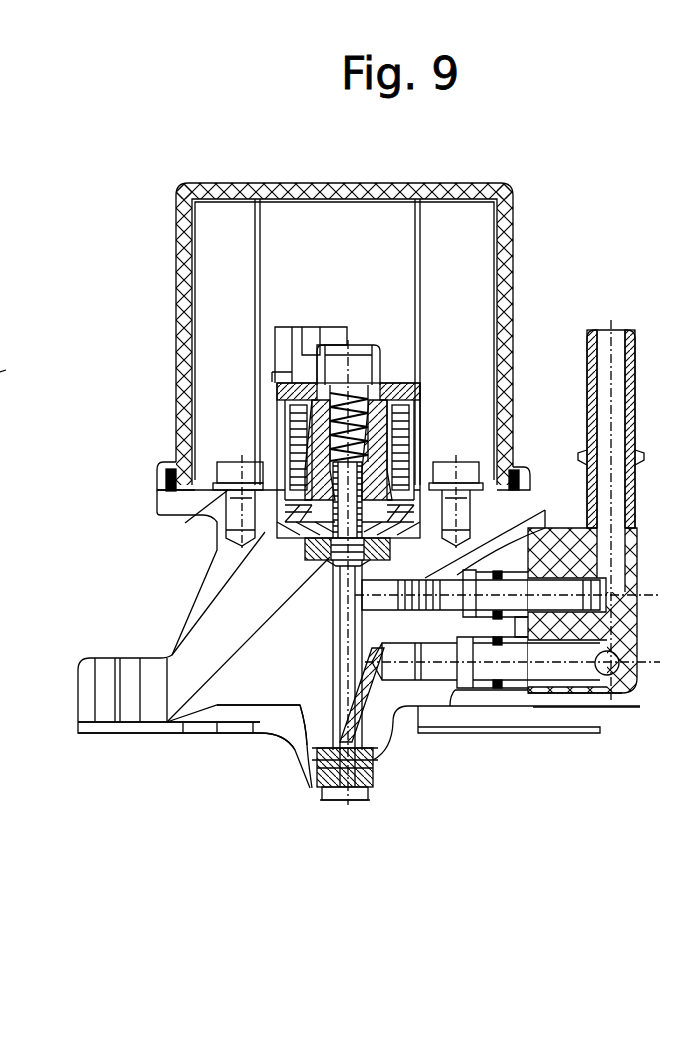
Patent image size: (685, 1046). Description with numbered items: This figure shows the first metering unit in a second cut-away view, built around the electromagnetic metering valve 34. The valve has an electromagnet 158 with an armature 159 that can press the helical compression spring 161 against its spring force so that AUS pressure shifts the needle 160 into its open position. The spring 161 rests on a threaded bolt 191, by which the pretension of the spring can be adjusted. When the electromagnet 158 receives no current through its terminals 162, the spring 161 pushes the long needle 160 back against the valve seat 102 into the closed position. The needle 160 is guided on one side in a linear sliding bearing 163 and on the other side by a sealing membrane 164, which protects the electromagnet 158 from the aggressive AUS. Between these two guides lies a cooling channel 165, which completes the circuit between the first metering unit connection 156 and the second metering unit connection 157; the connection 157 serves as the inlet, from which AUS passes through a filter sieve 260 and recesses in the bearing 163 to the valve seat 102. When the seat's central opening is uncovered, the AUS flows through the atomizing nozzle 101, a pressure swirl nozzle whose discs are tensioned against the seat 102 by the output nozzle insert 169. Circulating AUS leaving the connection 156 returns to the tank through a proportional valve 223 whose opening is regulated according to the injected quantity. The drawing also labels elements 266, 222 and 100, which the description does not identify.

The cover 266 is at (177, 272).
The terminals 162 is at (300, 345).
The threaded bolt 191 is at (360, 363).
The electromagnet 158 is at (400, 360).
The helical compression spring 161 is at (345, 405).
The proportional valve 223 is at (480, 582).
The valve pin 222 is at (470, 600).
The first metering unit connection 156 is at (548, 545).
The second metering unit connection 157 is at (560, 700).
The filter sieve 260 is at (440, 663).
The bracket 100 is at (172, 549).
The armature 159 is at (265, 532).
The sealing membrane 164 is at (330, 565).
The cooling channel 165 is at (322, 707).
The electromagnetic metering valve 34 is at (320, 655).
The needle 160 is at (340, 722).
The linear sliding bearing 163 is at (312, 788).
The output nozzle insert 169 is at (341, 801).
The atomizing nozzle 101 is at (365, 805).
The valve seat 102 is at (376, 786).